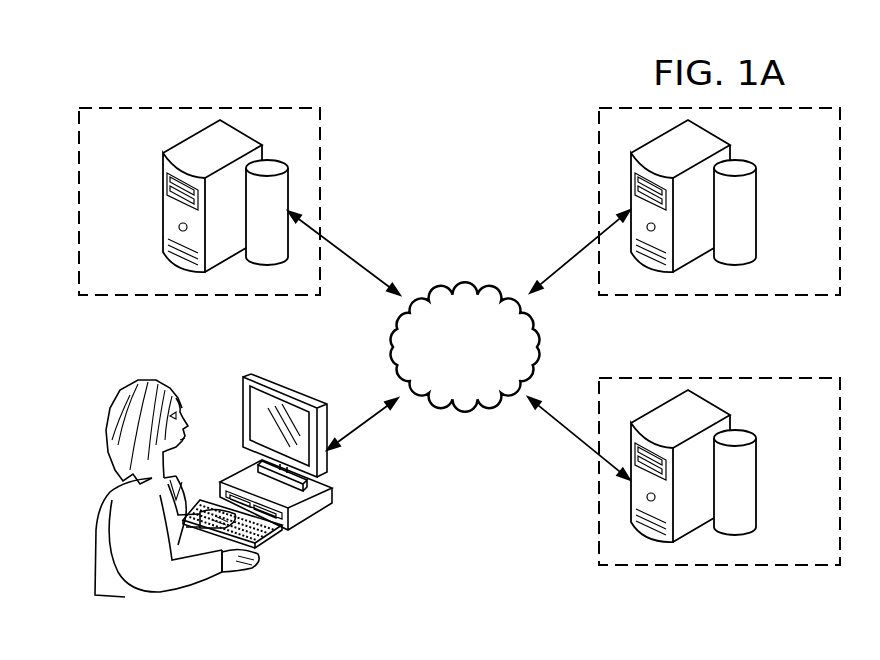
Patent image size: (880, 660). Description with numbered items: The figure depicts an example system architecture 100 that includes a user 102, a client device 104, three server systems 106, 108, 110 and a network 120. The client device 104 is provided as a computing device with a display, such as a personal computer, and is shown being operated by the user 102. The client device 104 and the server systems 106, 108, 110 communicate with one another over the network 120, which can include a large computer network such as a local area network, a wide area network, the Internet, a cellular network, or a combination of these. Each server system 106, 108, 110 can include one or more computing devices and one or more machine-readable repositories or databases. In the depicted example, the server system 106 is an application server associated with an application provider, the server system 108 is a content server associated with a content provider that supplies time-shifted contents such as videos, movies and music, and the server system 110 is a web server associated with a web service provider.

The system architecture 100 is at (351, 77).
The user 102 is at (94, 528).
The client device 104 is at (332, 494).
The server system 106 is at (757, 490).
The server system 108 is at (757, 200).
The server system 110 is at (163, 204).
The network 120 is at (465, 290).